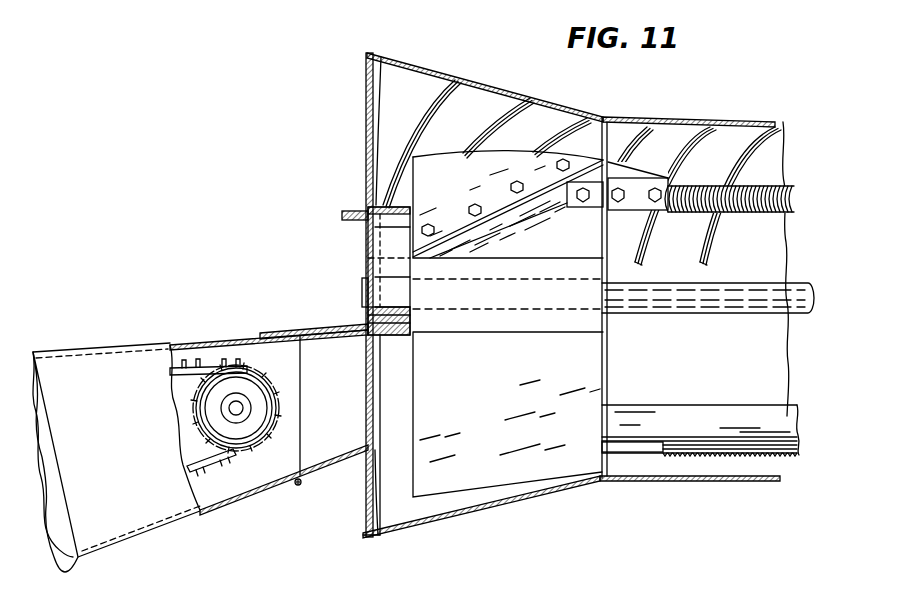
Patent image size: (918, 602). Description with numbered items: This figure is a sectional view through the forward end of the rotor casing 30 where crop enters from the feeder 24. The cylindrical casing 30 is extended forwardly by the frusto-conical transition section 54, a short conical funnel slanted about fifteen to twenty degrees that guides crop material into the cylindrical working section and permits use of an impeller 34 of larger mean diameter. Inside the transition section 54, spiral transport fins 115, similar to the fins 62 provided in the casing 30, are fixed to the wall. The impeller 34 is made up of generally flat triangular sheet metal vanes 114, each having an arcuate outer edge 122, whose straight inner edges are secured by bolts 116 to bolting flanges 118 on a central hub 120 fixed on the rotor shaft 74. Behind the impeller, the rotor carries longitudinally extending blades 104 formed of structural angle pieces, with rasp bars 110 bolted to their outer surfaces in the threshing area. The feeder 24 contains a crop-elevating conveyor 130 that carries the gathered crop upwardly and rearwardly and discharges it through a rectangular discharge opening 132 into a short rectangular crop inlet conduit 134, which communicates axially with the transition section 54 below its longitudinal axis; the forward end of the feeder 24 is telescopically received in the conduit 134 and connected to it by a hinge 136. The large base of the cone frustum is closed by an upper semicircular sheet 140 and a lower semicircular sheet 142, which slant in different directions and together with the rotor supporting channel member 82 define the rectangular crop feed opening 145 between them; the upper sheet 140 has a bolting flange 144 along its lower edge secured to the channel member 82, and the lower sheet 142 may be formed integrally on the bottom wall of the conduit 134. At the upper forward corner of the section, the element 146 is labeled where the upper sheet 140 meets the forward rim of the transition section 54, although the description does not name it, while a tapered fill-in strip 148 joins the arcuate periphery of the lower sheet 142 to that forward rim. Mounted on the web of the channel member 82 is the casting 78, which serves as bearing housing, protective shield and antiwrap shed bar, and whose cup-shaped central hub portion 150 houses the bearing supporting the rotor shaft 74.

The feeder 24 is at (183, 343).
The rotor casing 30 is at (748, 115).
The impeller 34 is at (474, 192).
The frusto-conical transition section 54 is at (494, 82).
The spiral transport fins 62 is at (710, 102).
The rotor shaft 74 is at (648, 315).
The casting 78 is at (390, 263).
The rotor supporting channel member 82 is at (359, 244).
The longitudinally extending blades 104 is at (682, 410).
The rasp bars 110 is at (768, 212).
The vanes 114 is at (445, 170).
The spiral transport fins 115 is at (500, 108).
The bolts 116 is at (558, 163).
The bolting flanges 118 is at (546, 214).
The central hub 120 is at (488, 270).
The arcuate outer edge 122 is at (496, 128).
The crop-elevating conveyor 130 is at (193, 462).
The rectangular discharge opening 132 is at (300, 415).
The crop inlet conduit 134 is at (340, 468).
The hinge 136 is at (297, 488).
The upper semicircular sheet 140 is at (370, 149).
The lower semicircular sheet 142 is at (372, 490).
The bolting flange 144 is at (360, 211).
The rectangular crop feed opening 145 is at (367, 393).
The upper corner flange 146 is at (381, 60).
The tapered fill-in strip 148 is at (377, 536).
The central hub portion 150 is at (400, 333).